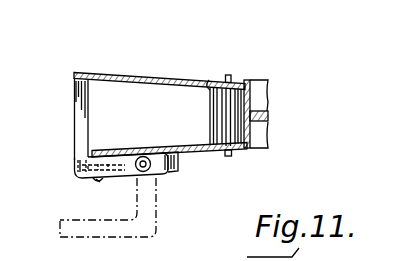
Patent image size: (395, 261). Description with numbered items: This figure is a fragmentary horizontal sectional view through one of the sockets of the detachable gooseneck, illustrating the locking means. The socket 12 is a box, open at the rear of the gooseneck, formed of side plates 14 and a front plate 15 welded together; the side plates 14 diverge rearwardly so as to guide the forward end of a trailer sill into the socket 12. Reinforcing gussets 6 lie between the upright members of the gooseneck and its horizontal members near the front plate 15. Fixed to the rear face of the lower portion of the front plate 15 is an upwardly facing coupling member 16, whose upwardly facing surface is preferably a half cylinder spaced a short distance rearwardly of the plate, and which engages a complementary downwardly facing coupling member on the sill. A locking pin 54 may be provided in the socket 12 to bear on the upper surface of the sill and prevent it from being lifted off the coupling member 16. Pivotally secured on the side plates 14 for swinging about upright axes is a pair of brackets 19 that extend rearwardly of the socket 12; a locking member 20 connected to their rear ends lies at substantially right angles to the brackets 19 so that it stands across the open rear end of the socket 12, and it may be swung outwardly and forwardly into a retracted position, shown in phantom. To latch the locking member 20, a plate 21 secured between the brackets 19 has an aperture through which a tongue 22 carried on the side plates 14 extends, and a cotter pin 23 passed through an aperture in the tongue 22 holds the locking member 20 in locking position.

The socket 12 is at (113, 70).
The side plates 14 is at (138, 78).
The coupling member 16 is at (208, 89).
The locking pin 54 is at (228, 100).
The front plate 15 is at (253, 96).
The reinforcing gussets 6 is at (266, 118).
The locking member 20 is at (76, 115).
The brackets 19 is at (75, 163).
The plate 21 is at (76, 170).
The tongue 22 is at (78, 180).
The cotter pin 23 is at (100, 182).